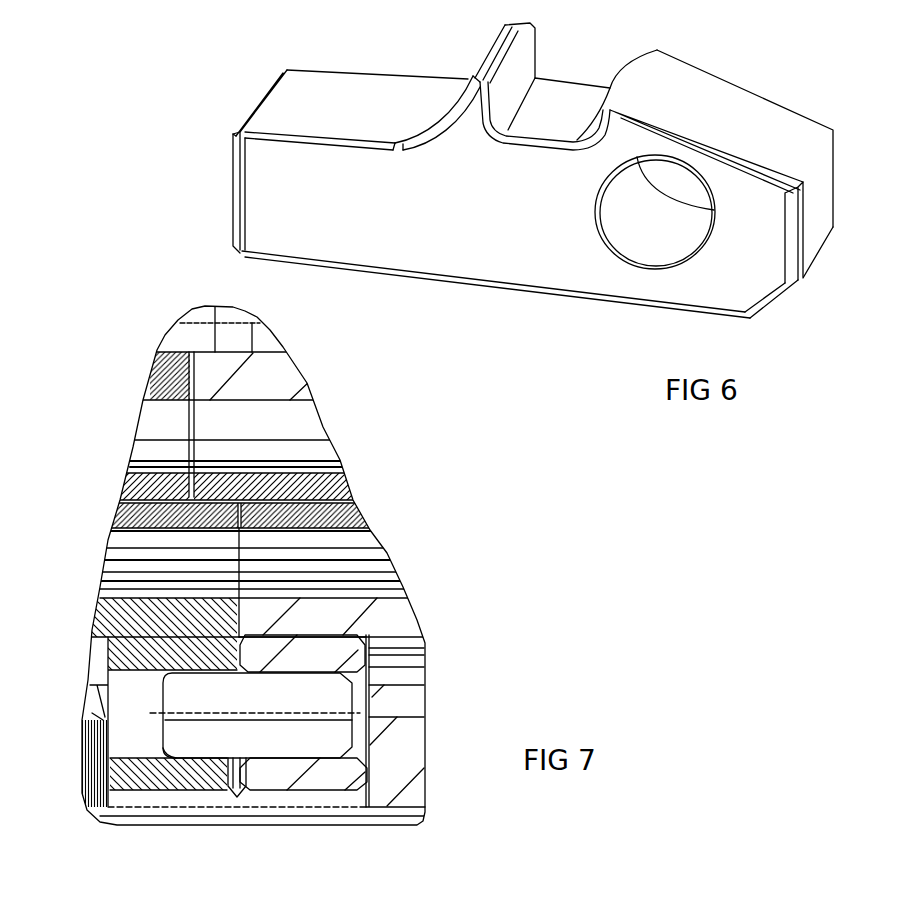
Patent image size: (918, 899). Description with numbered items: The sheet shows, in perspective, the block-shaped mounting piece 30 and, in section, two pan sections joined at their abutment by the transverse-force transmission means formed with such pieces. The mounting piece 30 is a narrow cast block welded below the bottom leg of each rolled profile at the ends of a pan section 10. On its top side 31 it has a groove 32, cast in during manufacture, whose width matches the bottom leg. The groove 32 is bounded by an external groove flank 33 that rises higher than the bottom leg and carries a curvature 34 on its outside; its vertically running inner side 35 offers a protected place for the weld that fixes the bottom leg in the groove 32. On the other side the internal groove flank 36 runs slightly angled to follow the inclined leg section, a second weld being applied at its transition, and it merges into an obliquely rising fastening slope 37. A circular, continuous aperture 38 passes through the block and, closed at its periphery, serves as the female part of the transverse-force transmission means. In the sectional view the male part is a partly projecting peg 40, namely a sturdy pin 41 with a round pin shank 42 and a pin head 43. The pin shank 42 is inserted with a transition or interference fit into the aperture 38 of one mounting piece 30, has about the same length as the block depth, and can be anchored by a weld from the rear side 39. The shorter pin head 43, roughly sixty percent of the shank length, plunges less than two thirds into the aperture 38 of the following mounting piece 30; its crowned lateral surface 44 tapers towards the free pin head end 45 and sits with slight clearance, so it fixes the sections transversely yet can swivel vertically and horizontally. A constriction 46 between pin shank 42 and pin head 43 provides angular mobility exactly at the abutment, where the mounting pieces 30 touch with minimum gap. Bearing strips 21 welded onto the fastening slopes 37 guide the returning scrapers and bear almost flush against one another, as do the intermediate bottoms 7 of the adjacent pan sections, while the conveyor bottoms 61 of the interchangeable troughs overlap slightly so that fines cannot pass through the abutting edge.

In FIG. 7, the intermediate bottom 7 is at (120, 513).
In FIG. 7, the pan section 10 is at (145, 417).
In FIG. 7, the bearing strip 21 is at (97, 613).
In FIG. 6, the mounting piece 30 is at (507, 270).
In FIG. 7, the mounting piece 30 is at (197, 777).
In FIG. 6, the top side 31 is at (365, 103).
In FIG. 6, the groove 32 is at (591, 80).
In FIG. 6, the external groove flank 33 is at (479, 113).
In FIG. 6, the curvature 34 is at (454, 100).
In FIG. 6, the inner side 35 is at (527, 60).
In FIG. 6, the internal groove flank 36 is at (627, 123).
In FIG. 6, the fastening slope 37 is at (763, 123).
In FIG. 6, the aperture 38 is at (661, 233).
In FIG. 7, the aperture 38 is at (290, 637).
In FIG. 7, the rear side 39 is at (370, 658).
In FIG. 7, the peg 40 is at (330, 694).
In FIG. 7, the pin 41 is at (334, 635).
In FIG. 7, the pin shank 42 is at (303, 748).
In FIG. 7, the pin head 43 is at (180, 738).
In FIG. 7, the crowned lateral surface 44 is at (172, 672).
In FIG. 7, the free pin head end 45 is at (158, 733).
In FIG. 7, the constriction 46 is at (229, 792).
In FIG. 7, the conveyor bottom 61 is at (137, 487).